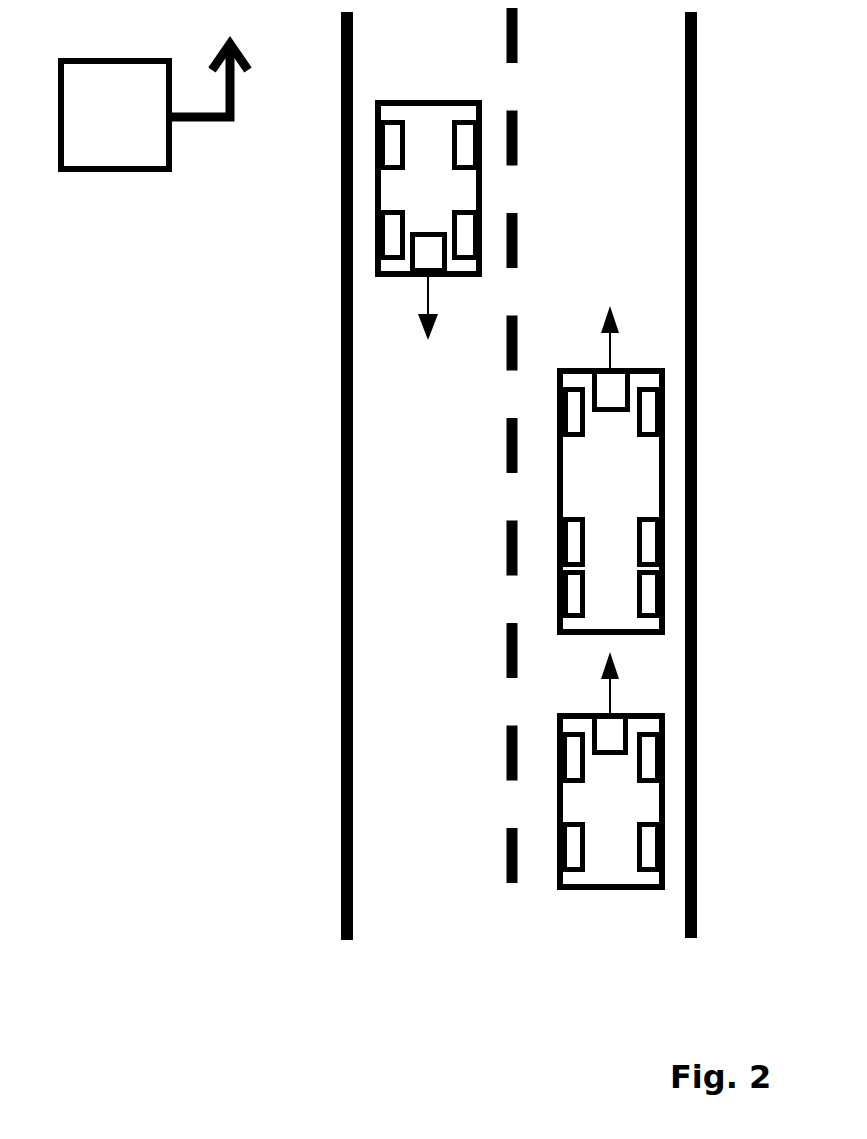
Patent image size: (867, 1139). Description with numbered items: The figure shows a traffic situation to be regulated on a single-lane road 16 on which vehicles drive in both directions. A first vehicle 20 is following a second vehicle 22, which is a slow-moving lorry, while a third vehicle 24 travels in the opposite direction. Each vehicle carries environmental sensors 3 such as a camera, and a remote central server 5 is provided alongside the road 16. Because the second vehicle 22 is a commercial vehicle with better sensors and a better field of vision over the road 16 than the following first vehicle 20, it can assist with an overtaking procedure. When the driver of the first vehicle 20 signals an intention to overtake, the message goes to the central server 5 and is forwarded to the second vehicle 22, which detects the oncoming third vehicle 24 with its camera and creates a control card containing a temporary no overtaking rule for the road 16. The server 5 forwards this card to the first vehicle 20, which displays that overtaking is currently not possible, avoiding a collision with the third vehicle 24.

The environmental sensors 3 is at (520, 494).
The remote central server 5 is at (154, 106).
The single-lane road 16 is at (377, 858).
The first vehicle 20 is at (611, 769).
The second vehicle 22 is at (611, 469).
The third vehicle 24 is at (428, 221).